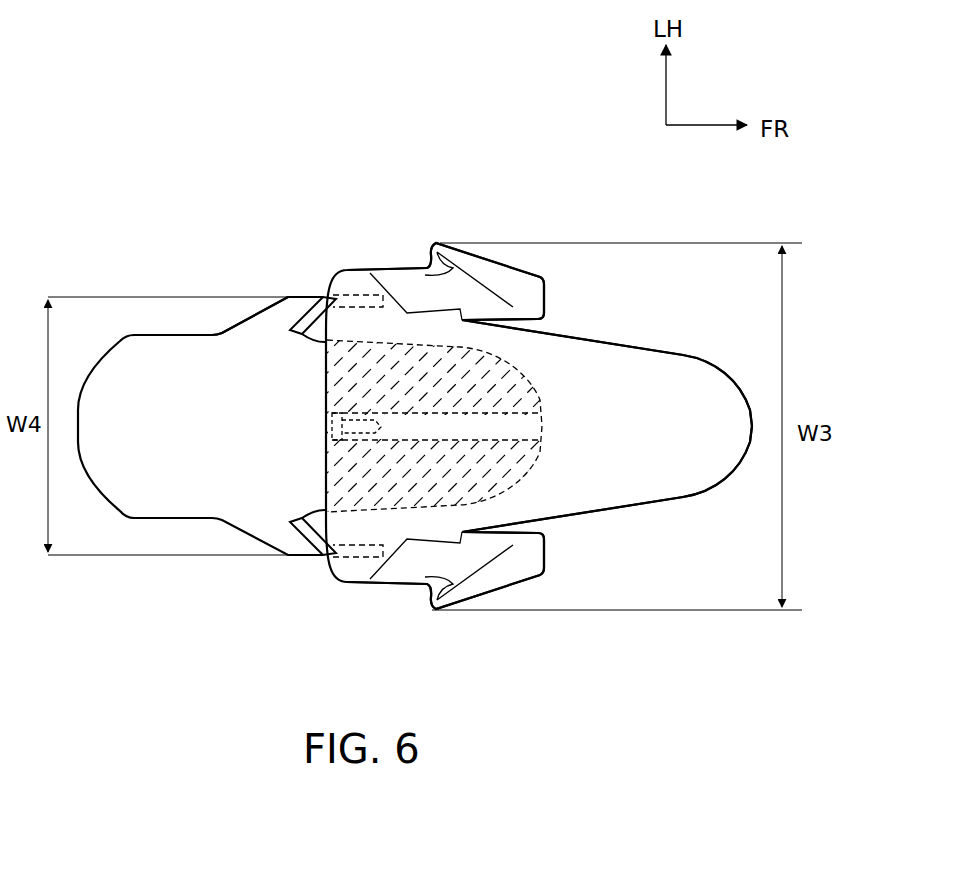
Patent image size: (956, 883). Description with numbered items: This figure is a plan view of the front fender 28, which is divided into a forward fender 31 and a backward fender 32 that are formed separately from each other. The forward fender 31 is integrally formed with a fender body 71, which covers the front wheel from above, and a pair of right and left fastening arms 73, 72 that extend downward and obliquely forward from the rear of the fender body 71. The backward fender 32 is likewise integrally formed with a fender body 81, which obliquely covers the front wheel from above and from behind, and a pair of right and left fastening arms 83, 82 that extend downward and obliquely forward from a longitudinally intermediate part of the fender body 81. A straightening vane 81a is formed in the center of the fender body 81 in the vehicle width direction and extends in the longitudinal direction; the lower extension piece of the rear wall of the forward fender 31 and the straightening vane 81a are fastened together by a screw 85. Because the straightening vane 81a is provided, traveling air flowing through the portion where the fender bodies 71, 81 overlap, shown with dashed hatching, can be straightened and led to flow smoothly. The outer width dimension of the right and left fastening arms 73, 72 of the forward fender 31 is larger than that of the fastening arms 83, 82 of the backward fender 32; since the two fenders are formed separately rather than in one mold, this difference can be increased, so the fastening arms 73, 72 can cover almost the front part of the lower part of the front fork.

The front fender 28 is at (567, 218).
The forward fender 31 is at (687, 353).
The backward fender 32 is at (156, 329).
The fender body 71 is at (613, 356).
The left fastening arm 72 is at (490, 273).
The right fastening arm 73 is at (505, 578).
The fender body 81 is at (207, 355).
The straightening vane 81a is at (415, 437).
The left fastening arm 82 is at (305, 292).
The right fastening arm 83 is at (308, 560).
The screw 85 is at (326, 428).